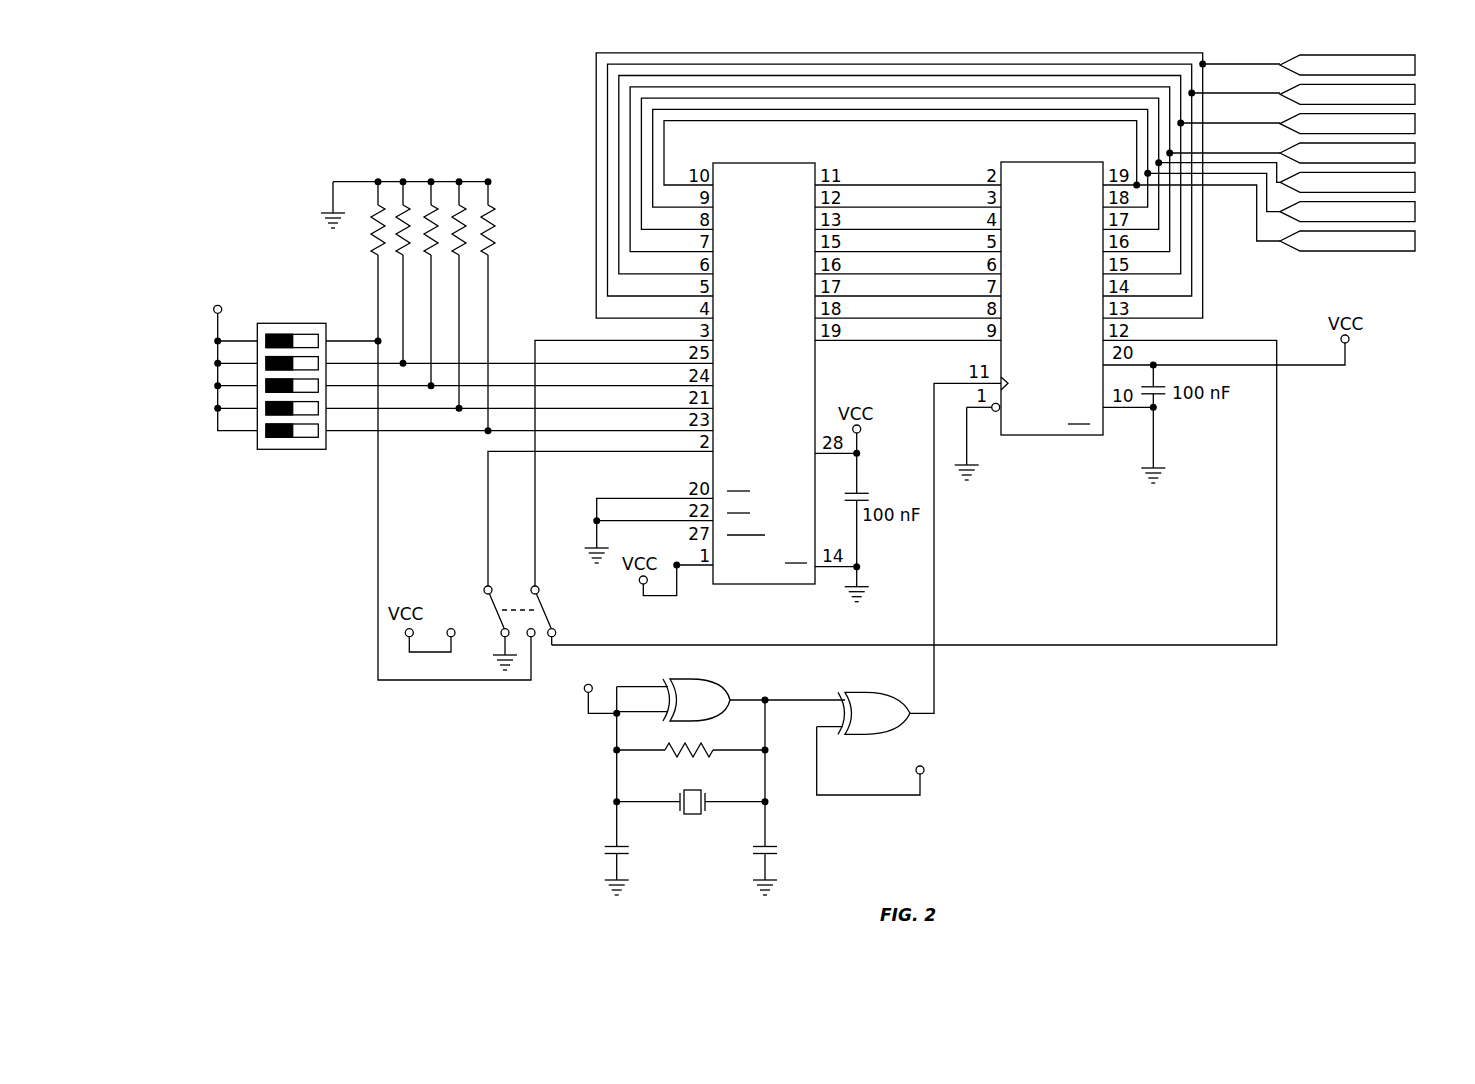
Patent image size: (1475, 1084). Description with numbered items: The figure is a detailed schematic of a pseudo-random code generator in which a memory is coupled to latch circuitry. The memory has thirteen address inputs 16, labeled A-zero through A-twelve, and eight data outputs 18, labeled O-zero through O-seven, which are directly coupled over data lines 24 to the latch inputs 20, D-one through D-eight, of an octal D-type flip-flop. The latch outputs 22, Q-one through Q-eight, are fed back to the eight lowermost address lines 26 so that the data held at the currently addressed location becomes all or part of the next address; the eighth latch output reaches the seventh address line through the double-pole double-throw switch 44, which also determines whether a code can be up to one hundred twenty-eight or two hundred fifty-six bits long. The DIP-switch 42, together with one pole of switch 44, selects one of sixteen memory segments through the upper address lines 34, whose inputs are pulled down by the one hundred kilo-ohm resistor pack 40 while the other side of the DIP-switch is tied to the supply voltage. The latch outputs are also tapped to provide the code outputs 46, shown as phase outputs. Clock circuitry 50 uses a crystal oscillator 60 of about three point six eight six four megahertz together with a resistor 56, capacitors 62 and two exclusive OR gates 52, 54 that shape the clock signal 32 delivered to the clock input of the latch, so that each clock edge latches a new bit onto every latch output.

The address inputs 16 is at (746, 160).
The data outputs 18 is at (796, 160).
The latch inputs 20 is at (1034, 160).
The latch outputs 22 is at (1086, 160).
The data lines 24 is at (887, 342).
The lowermost address lines 26 is at (596, 96).
The clock signal 32 is at (934, 548).
The address select lines 34 is at (398, 434).
The pull-up resistors 40 is at (420, 112).
The DIP-switch 42 is at (276, 262).
The double-pole double-throw switch 44 is at (474, 578).
The code outputs 46 is at (1422, 257).
The clock circuitry 50 is at (736, 778).
The exclusive OR gate 52 is at (714, 680).
The exclusive OR gate 54 is at (873, 690).
The resistor 56 is at (718, 736).
The crystal oscillator 60 is at (710, 788).
The capacitors 62 is at (760, 865).